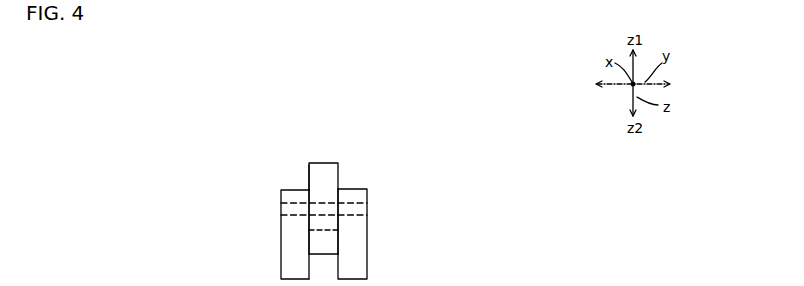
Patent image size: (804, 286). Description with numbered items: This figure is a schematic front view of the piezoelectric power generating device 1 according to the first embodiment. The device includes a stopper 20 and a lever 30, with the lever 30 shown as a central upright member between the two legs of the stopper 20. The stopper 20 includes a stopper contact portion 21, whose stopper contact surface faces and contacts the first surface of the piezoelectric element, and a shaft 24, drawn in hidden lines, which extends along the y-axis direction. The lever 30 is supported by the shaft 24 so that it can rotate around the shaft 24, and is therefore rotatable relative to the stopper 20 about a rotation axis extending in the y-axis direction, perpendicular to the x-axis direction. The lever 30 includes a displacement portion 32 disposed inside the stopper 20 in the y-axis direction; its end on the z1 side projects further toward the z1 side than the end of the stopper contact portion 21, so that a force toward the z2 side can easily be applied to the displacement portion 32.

The piezoelectric power generating device 1 is at (351, 156).
The stopper 20 is at (364, 234).
The stopper contact portion 21 is at (367, 230).
The shaft 24 is at (354, 198).
The lever 30 is at (278, 170).
The displacement portion 32 is at (309, 176).